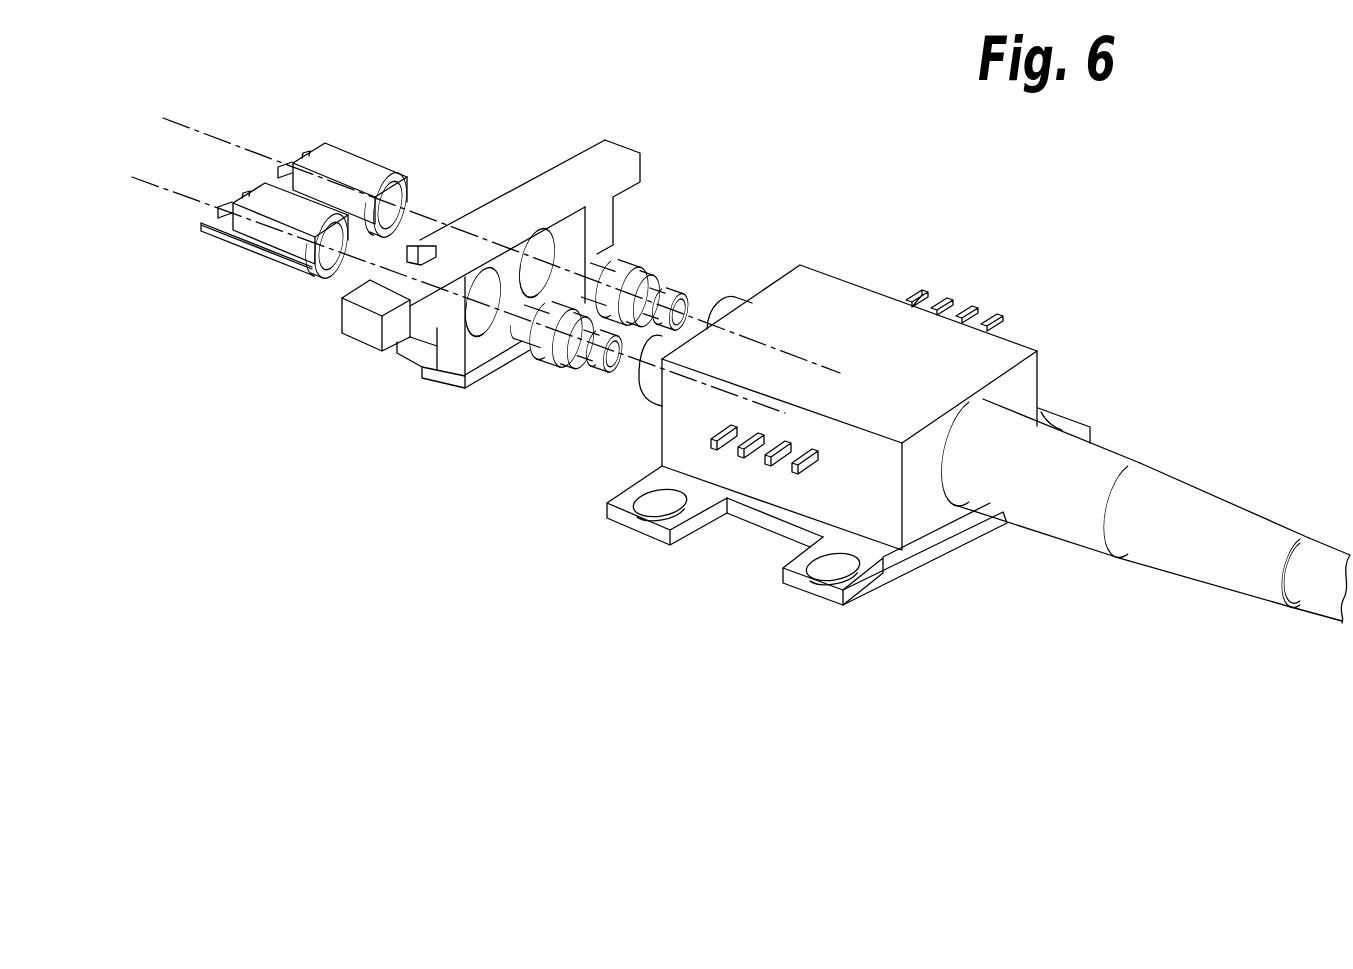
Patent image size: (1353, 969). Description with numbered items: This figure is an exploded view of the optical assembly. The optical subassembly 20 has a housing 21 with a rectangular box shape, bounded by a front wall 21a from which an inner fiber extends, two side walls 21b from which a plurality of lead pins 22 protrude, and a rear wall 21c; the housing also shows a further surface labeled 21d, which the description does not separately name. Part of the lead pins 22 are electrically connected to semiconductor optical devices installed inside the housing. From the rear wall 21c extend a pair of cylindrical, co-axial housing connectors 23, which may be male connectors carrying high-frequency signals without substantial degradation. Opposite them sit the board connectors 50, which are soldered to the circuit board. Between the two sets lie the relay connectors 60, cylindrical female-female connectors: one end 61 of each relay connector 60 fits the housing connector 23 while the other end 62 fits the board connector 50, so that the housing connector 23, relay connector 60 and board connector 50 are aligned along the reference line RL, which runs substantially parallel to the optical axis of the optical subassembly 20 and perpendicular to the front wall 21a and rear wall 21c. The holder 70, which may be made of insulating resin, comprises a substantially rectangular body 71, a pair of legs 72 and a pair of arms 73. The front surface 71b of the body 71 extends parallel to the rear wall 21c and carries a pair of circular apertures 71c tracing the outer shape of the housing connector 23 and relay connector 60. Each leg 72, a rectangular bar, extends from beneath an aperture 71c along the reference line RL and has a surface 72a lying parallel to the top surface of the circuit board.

The reference line RL is at (172, 187).
The optical subassembly 20 is at (970, 422).
The housing 21 is at (978, 422).
The front wall 21a is at (1022, 392).
The side walls 21b is at (887, 539).
The rear wall 21c is at (770, 287).
The housing front wall 21d is at (848, 395).
The lead pins 22 is at (917, 297).
The housing connector 23 is at (727, 303).
The board connector 50 is at (360, 147).
The relay connector 60 is at (627, 278).
The one end of relay connector 61 is at (665, 290).
The other end of relay connector 62 is at (603, 270).
The holder 70 is at (489, 254).
The body 71 is at (489, 254).
The front surface 71b is at (600, 222).
The apertures 71c is at (580, 245).
The legs 72 is at (332, 318).
The surface of leg 72a is at (332, 298).
The arms 73 is at (605, 148).